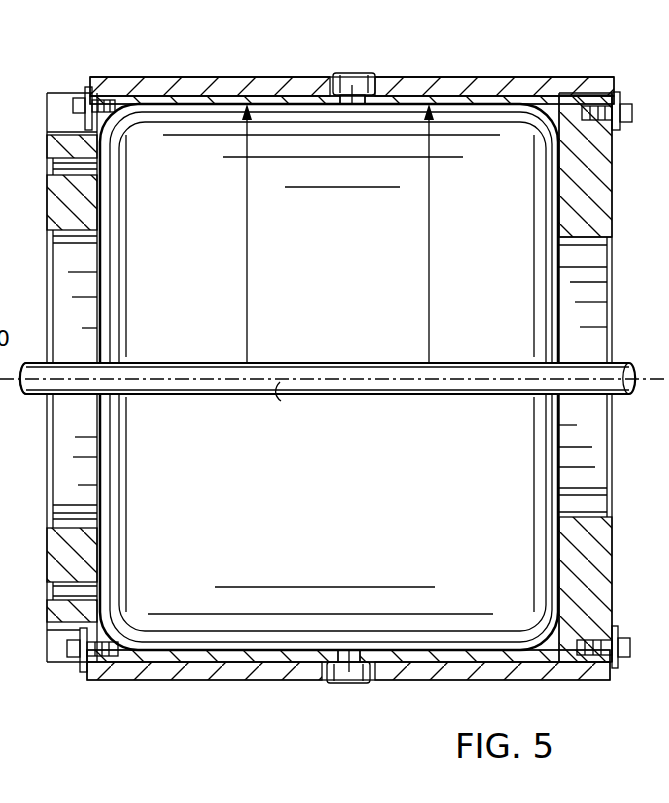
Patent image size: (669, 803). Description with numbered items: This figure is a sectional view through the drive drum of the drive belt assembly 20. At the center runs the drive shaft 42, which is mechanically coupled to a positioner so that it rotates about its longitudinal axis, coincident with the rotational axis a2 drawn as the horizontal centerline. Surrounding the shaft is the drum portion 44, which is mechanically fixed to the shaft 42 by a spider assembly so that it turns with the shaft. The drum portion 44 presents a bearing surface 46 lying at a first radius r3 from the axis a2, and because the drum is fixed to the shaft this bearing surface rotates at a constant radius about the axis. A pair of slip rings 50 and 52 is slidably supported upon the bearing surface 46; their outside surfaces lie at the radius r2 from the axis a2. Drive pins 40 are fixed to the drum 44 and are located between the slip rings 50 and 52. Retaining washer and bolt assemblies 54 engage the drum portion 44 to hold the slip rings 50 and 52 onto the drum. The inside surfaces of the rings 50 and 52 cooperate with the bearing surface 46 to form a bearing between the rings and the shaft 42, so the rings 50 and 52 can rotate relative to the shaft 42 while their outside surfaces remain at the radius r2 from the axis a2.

The drive belt assembly 20 is at (122, 705).
The drive pins 40 is at (352, 73).
The drive shaft 42 is at (148, 395).
The drum portion 44 is at (85, 213).
The bearing surface 46 is at (528, 87).
The slip ring 50 is at (228, 77).
The slip ring 52 is at (450, 77).
The retaining washer and bolt assemblies 54 is at (72, 103).
The first radius r3 is at (268, 233).
The radius of slip ring outside surface r2 is at (450, 233).
The rotational axis a2 is at (283, 403).